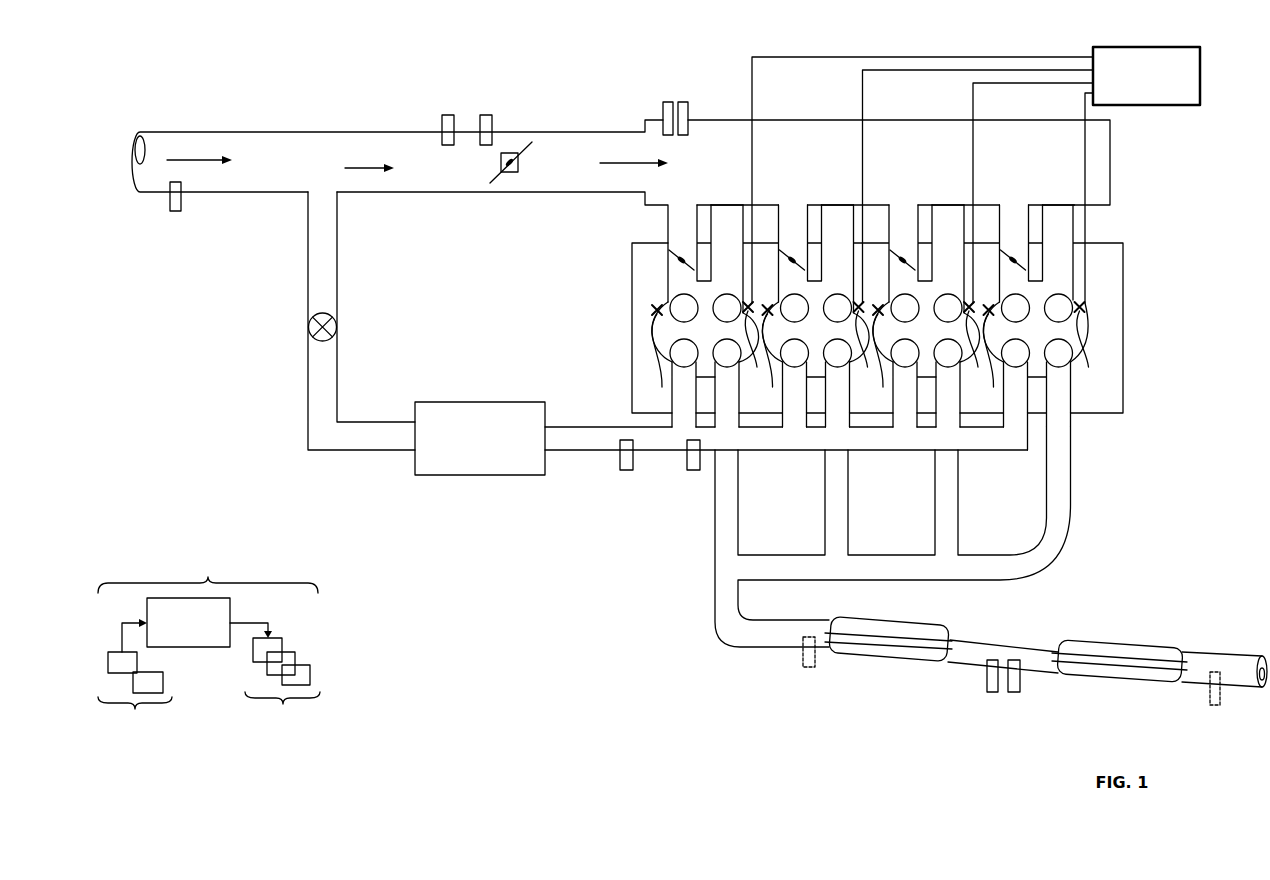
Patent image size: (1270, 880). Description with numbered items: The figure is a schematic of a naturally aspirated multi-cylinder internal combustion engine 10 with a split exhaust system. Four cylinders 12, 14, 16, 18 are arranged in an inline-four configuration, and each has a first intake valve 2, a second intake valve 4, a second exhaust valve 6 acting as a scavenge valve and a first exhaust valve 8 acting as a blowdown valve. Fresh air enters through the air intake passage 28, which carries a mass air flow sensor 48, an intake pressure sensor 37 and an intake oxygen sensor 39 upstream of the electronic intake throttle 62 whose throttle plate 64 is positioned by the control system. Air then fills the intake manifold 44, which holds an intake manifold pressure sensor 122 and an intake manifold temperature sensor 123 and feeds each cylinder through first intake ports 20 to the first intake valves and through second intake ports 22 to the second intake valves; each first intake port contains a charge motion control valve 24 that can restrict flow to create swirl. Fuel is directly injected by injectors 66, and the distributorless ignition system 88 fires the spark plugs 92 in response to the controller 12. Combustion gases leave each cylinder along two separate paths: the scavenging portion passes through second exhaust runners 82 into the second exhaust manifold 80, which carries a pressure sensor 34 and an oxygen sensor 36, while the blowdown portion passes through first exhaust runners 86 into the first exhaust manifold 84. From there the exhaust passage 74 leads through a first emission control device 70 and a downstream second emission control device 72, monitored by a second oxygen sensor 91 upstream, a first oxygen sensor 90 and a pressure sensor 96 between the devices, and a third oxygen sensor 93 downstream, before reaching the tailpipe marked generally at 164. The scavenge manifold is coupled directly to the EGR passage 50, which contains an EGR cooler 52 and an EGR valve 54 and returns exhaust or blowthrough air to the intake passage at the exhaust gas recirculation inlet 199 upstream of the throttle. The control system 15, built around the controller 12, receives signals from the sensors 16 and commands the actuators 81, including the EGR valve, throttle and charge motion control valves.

The first intake valve 2 is at (850, 308).
The second intake valve 4 is at (893, 308).
The second exhaust valve (scavenge valve) 6 is at (850, 353).
The first exhaust valve (blowdown valve) 8 is at (893, 353).
The internal combustion engine 10 is at (1110, 433).
The controller 12 is at (697, 340).
The cylinder 14 is at (825, 283).
The control system 15 is at (208, 572).
The sensors 16 is at (697, 340).
The cylinder 18 is at (1035, 332).
The first intake port 20 is at (675, 232).
The second intake port 22 is at (719, 232).
The charge motion control valve (CMCV) 24 is at (673, 253).
The air intake passage 28 is at (220, 194).
The pressure sensor 34 is at (626, 471).
The oxygen sensor 36 is at (693, 471).
The intake pressure sensor 37 is at (448, 115).
The intake oxygen sensor 39 is at (486, 115).
The intake manifold 44 is at (881, 167).
The mass air flow (MAF) sensor 48 is at (175, 211).
The EGR passage 50 is at (318, 452).
The EGR cooler 52 is at (469, 446).
The EGR valve 54 is at (313, 340).
The intake throttle 62 is at (517, 150).
The throttle plate 64 is at (495, 178).
The fuel injector 66 is at (819, 353).
The first emission control device 70 is at (893, 620).
The second emission control device 72 is at (1097, 641).
The exhaust passage 74 is at (966, 666).
The second exhaust manifold (scavenge manifold) 80 is at (813, 446).
The actuators 81 is at (275, 678).
The second exhaust runner 82 is at (676, 386).
The first exhaust manifold (blowdown manifold) 84 is at (768, 576).
The first exhaust runner 86 is at (719, 396).
The distributorless ignition system 88 is at (1113, 107).
The first oxygen sensor 90 is at (993, 693).
The second oxygen sensor 91 is at (812, 668).
The spark plug 92 is at (917, 342).
The third oxygen sensor 93 is at (1215, 706).
The pressure sensor 96 is at (1014, 693).
The intake manifold pressure (MAP) sensor 122 is at (668, 102).
The intake manifold temperature sensor 123 is at (683, 102).
The exhaust system 164 is at (657, 628).
The exhaust gas recirculation inlet 199 is at (335, 212).